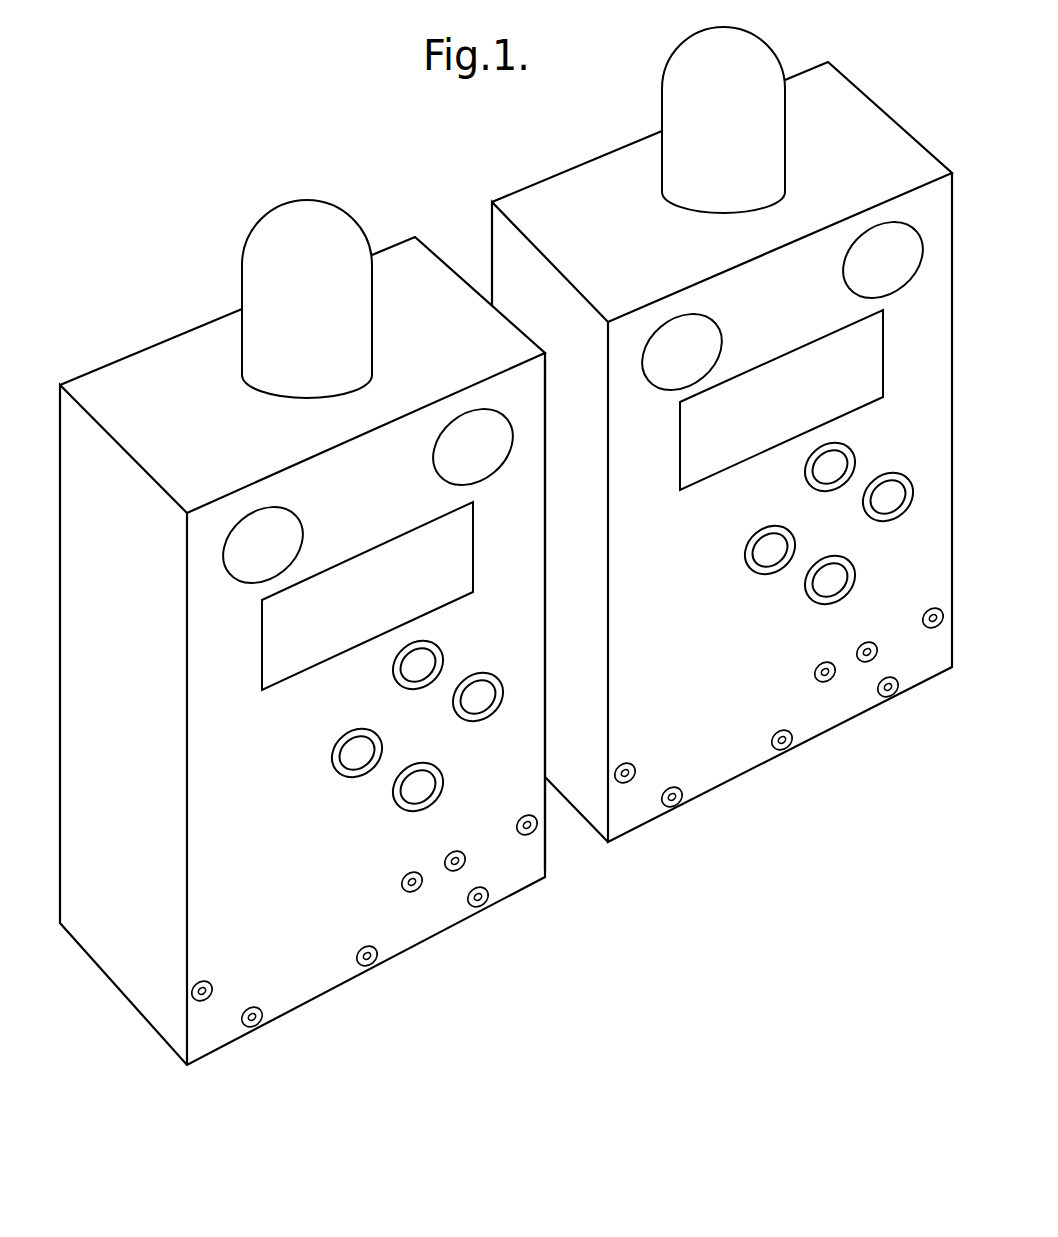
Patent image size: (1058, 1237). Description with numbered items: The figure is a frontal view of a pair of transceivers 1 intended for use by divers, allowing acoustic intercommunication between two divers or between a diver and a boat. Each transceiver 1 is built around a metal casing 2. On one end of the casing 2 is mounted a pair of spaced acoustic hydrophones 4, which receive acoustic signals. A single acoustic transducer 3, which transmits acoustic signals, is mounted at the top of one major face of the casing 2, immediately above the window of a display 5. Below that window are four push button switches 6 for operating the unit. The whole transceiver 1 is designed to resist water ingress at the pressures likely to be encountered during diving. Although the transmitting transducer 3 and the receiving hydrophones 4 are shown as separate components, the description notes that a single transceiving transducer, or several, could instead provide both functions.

The transceiver 1 is at (151, 384).
The metal casing 2 is at (633, 630).
The acoustic transducer 3 is at (345, 302).
The acoustic hydrophones 4 is at (255, 556).
The display 5 is at (365, 606).
The push button switches 6 is at (418, 672).